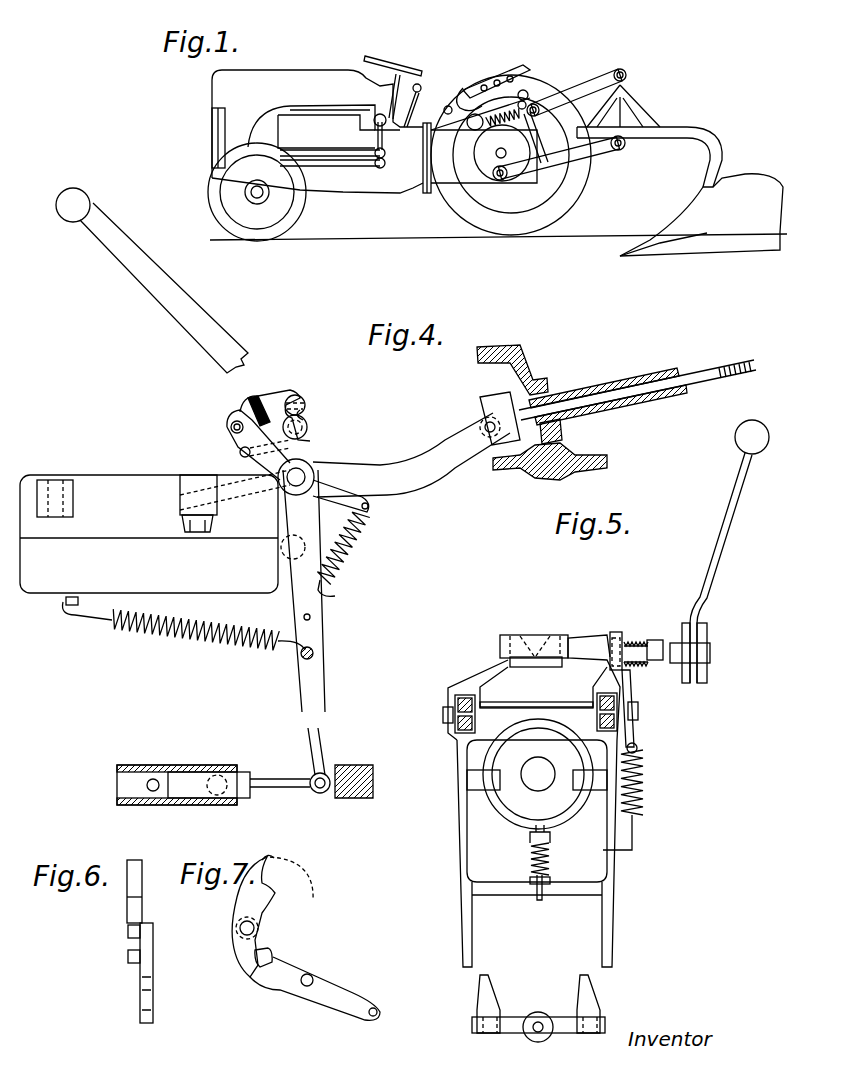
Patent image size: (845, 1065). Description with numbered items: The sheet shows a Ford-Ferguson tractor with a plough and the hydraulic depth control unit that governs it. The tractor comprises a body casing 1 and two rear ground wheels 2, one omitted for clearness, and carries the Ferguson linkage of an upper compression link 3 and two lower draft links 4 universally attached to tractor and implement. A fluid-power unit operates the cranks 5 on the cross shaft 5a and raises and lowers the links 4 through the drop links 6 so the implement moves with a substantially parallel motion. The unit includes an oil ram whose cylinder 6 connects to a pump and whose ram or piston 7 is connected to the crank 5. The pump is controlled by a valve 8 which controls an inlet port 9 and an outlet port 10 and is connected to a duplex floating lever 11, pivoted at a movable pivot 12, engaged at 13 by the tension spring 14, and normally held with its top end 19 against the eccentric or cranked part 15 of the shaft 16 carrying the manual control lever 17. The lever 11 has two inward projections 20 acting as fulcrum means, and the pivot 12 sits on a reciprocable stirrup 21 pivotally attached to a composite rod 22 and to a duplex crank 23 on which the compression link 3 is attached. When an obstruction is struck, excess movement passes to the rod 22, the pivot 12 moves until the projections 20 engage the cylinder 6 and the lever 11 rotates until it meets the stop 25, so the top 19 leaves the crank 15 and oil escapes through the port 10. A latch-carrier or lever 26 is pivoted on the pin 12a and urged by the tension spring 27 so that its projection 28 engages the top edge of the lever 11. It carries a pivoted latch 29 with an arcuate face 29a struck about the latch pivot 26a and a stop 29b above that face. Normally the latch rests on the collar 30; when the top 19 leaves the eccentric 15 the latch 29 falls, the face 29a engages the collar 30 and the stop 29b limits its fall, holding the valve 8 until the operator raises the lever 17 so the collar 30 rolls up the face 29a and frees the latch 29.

In FIG. 1, the body casing 1 is at (448, 175).
In FIG. 1, the rear ground wheels 2 is at (528, 220).
In FIG. 1, the upper compression link 3 is at (590, 82).
In FIG. 1, the lower draft links 4 is at (608, 148).
In FIG. 1, the cranks 5 is at (512, 100).
In FIG. 1, the cross shaft 5a is at (474, 114).
In FIG. 1, the cylinder 6 is at (557, 137).
In FIG. 4, the cylinder 6 is at (38, 590).
In FIG. 5, the cylinder 6 is at (520, 830).
In FIG. 5, the ram or piston 7 is at (507, 810).
In FIG. 4, the valve 8 is at (188, 792).
In FIG. 4, the inlet port 9 is at (222, 780).
In FIG. 4, the outlet port 10 is at (153, 779).
In FIG. 4, the lever 11 is at (317, 690).
In FIG. 5, the lever 11 is at (603, 948).
In FIG. 5, the pivot 12 is at (610, 713).
In FIG. 5, the pin 12a is at (640, 715).
In FIG. 4, the spring engagement point 13 is at (300, 653).
In FIG. 5, the spring engagement point 13 is at (547, 888).
In FIG. 4, the tension spring 14 is at (128, 632).
In FIG. 5, the tension spring 14 is at (552, 863).
In FIG. 4, the eccentric or cranked part 15 is at (296, 395).
In FIG. 5, the eccentric or cranked part 15 is at (506, 633).
In FIG. 4, the shaft 16 is at (307, 424).
In FIG. 5, the shaft 16 is at (652, 650).
In FIG. 4, the manual control lever 17 is at (157, 293).
In FIG. 5, the manual control lever 17 is at (707, 570).
In FIG. 4, the top end of lever 19 is at (250, 400).
In FIG. 5, the top end of lever 19 is at (508, 659).
In FIG. 4, the inward projections 20 is at (322, 593).
In FIG. 5, the inward projections 20 is at (477, 790).
In FIG. 4, the reciprocable stirrup 21 is at (427, 480).
In FIG. 5, the reciprocable stirrup 21 is at (593, 700).
In FIG. 4, the composite rod 22 is at (698, 377).
In FIG. 1, the duplex crank 23 is at (532, 106).
In FIG. 4, the stop 25 is at (348, 766).
In FIG. 4, the latch-carrier or lever 26 is at (355, 497).
In FIG. 5, the latch-carrier or lever 26 is at (633, 687).
In FIG. 6, the latch-carrier or lever 26 is at (142, 1002).
In FIG. 7, the latch-carrier or lever 26 is at (323, 993).
In FIG. 4, the latch pivot 26a is at (231, 427).
In FIG. 6, the latch pivot 26a is at (128, 930).
In FIG. 7, the latch pivot 26a is at (258, 927).
In FIG. 4, the tension spring 27 is at (352, 563).
In FIG. 5, the tension spring 27 is at (647, 802).
In FIG. 4, the projection 28 is at (240, 452).
In FIG. 6, the projection 28 is at (128, 963).
In FIG. 7, the projection 28 is at (260, 965).
In FIG. 4, the latch 29 is at (268, 392).
In FIG. 5, the latch 29 is at (617, 632).
In FIG. 6, the latch 29 is at (142, 873).
In FIG. 7, the latch 29 is at (240, 888).
In FIG. 4, the arcuate face 29a is at (303, 416).
In FIG. 7, the arcuate face 29a is at (277, 892).
In FIG. 7, the stop 29b is at (268, 857).
In FIG. 4, the collar 30 is at (300, 432).
In FIG. 5, the collar 30 is at (620, 640).